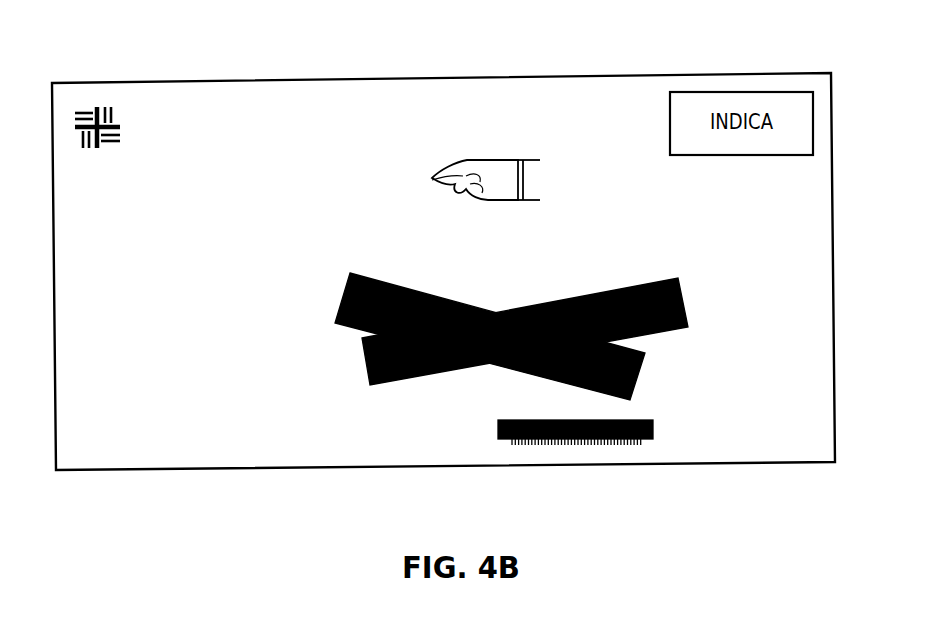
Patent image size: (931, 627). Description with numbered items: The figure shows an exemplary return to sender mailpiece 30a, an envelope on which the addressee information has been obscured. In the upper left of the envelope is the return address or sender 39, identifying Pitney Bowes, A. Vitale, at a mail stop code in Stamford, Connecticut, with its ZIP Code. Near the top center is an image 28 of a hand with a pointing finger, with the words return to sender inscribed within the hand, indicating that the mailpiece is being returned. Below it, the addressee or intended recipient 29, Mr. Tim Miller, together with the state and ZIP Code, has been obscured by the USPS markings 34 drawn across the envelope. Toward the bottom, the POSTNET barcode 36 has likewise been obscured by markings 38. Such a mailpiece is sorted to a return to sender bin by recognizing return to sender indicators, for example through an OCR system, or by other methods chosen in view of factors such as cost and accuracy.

The image of a hand with a pointing finger 28 is at (495, 160).
The addressee 29 is at (434, 269).
The return to sender mailpiece 30a is at (385, 467).
The USPS markings 34 is at (660, 279).
The POSTNET barcode 36 is at (603, 446).
The markings 38 is at (653, 420).
The return address or sender 39 is at (240, 236).